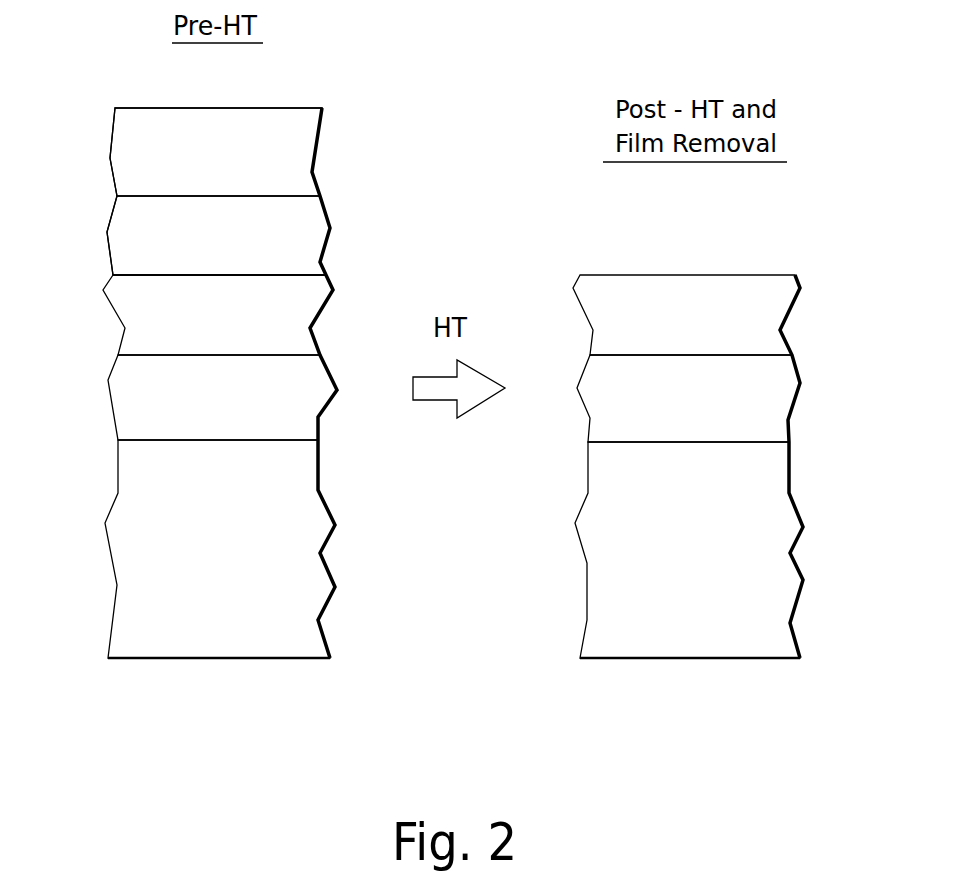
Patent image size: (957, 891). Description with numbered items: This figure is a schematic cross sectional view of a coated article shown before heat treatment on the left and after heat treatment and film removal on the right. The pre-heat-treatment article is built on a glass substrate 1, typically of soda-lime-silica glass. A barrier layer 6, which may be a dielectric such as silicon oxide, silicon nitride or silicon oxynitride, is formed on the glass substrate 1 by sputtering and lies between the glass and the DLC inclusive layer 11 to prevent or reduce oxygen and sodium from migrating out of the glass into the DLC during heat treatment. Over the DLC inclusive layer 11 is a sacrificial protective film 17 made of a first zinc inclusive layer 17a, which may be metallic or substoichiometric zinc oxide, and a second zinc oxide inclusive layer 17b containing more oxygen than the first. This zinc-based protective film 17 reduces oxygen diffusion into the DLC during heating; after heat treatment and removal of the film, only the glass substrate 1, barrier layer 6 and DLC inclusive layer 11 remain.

The sacrificial protective film 17 is at (98, 112).
The second zinc oxide inclusive layer 17b is at (303, 137).
The first zinc inclusive layer 17a is at (312, 218).
The DLC inclusive layer 11 is at (313, 287).
The barrier layer 6 is at (297, 423).
The glass substrate 1 is at (317, 583).